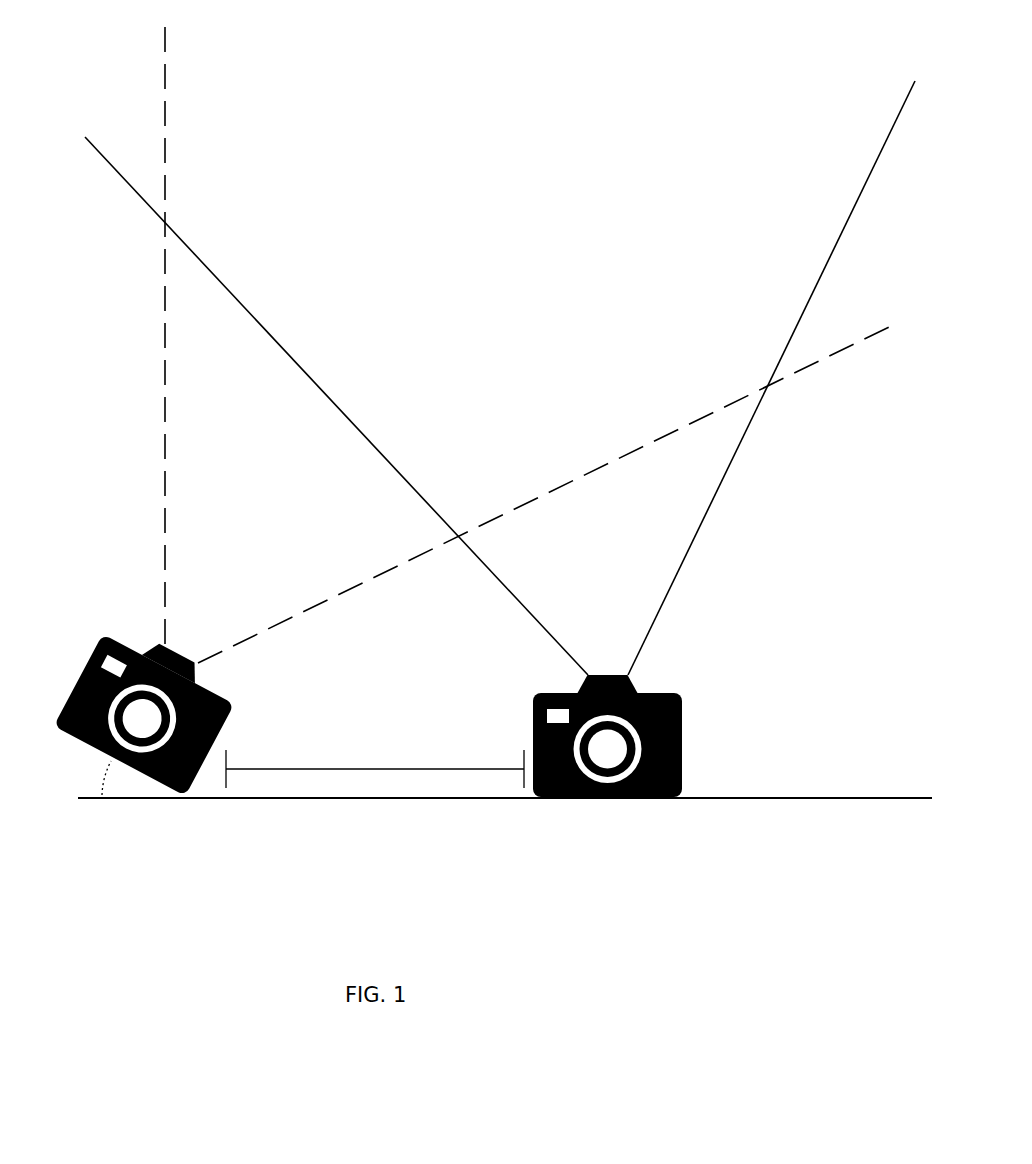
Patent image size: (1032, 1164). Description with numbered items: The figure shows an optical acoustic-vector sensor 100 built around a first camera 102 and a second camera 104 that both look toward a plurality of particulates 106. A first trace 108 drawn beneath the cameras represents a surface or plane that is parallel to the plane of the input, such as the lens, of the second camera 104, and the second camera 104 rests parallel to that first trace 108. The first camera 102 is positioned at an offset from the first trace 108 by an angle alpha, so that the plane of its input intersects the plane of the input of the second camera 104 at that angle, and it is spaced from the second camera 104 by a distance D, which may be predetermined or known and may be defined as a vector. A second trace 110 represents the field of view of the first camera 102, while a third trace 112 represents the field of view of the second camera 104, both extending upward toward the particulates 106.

The optical acoustic-vector sensor 100 is at (746, 944).
The first camera 102 is at (72, 694).
The second camera 104 is at (720, 767).
The particulates 106 is at (316, 78).
The first trace 108 is at (412, 798).
The second trace 110 is at (165, 257).
The third trace 112 is at (290, 358).